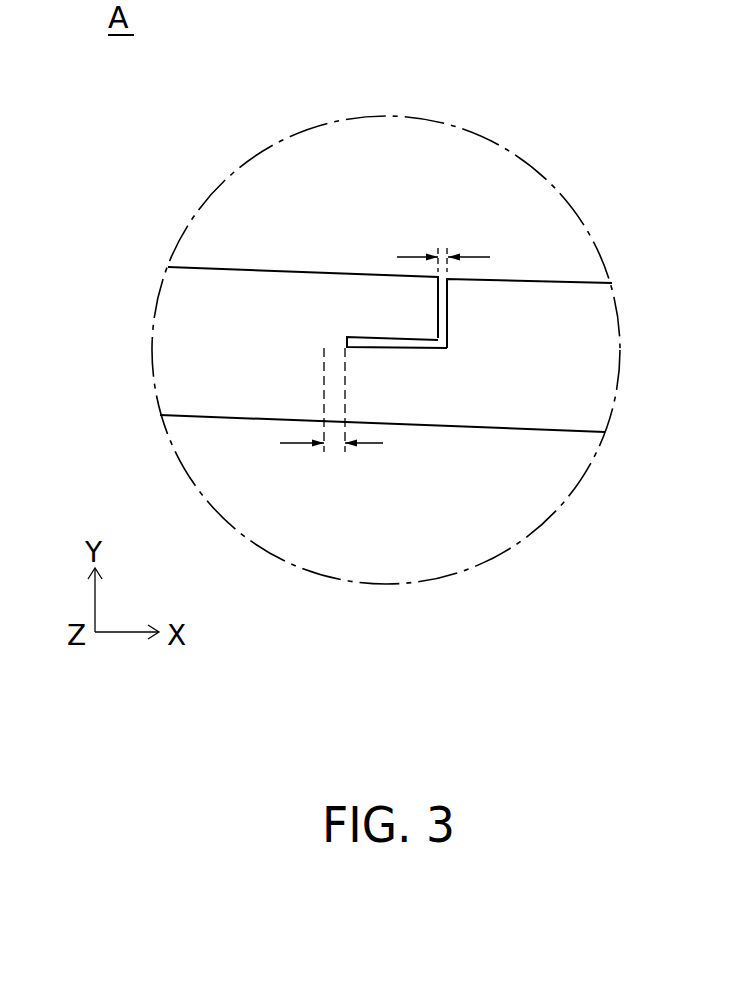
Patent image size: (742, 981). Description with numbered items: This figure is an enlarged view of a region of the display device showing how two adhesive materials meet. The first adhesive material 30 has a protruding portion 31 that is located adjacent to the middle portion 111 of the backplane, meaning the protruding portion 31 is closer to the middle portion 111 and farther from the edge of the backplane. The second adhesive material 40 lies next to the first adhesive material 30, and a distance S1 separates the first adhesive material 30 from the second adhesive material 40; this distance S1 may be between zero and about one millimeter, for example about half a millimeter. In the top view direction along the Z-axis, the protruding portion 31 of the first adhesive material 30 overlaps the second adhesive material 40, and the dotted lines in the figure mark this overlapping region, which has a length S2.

The middle portion of the backplane 111 is at (542, 498).
The second adhesive material 40 is at (170, 343).
The first adhesive material 30 is at (601, 324).
The protruding portion 31 is at (390, 392).
The distance S1 is at (445, 250).
The length S2 is at (332, 447).